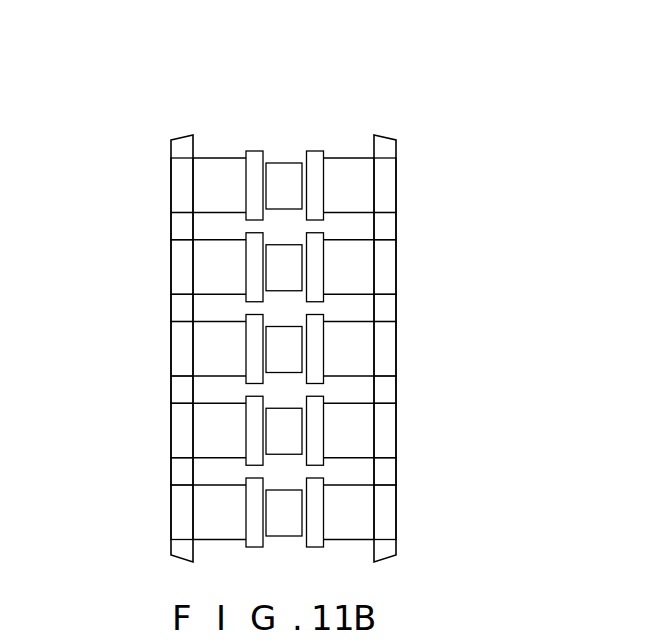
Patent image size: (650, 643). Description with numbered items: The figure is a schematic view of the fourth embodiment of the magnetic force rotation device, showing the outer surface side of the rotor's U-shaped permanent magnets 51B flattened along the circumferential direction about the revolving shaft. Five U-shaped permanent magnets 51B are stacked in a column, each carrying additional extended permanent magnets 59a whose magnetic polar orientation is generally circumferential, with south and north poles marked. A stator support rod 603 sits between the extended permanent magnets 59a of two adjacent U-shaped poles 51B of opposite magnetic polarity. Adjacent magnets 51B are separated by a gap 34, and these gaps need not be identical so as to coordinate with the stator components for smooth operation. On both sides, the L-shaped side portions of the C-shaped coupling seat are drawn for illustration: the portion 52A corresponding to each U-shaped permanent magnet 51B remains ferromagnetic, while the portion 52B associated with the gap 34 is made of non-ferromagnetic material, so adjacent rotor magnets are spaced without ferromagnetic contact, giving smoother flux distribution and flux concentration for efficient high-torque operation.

The gap 34 is at (218, 228).
The ferromagnetic portion of C-shaped coupling seat 52A is at (182, 199).
The non-ferromagnetic portion of C-shaped coupling seat 52B is at (182, 227).
The U-shaped permanent magnet 51B is at (215, 170).
The additional extended permanent magnet 59a is at (253, 151).
The stator support rod 603 is at (290, 170).